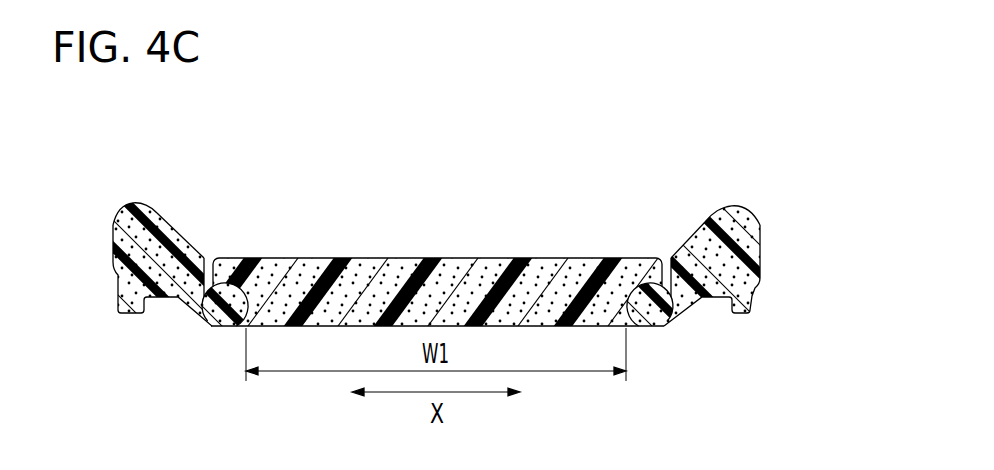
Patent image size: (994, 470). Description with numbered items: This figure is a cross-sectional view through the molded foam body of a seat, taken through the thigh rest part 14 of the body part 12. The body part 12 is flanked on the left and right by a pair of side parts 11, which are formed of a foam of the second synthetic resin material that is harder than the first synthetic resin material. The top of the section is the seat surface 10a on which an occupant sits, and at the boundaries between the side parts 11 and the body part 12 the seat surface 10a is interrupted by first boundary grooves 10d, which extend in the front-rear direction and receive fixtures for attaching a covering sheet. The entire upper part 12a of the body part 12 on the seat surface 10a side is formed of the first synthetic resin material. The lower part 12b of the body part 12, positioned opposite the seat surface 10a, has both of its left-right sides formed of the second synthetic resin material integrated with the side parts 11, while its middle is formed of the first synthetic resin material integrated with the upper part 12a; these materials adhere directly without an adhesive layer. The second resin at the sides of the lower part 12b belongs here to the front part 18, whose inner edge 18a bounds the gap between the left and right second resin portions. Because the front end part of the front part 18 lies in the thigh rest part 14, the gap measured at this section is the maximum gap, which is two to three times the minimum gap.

The seat surface 10a is at (165, 205).
The first boundary grooves 10d is at (205, 280).
The side parts 11 is at (434, 238).
The body part 12 is at (430, 246).
The upper part 12a is at (372, 250).
The lower part 12b is at (678, 330).
The thigh rest part 14 is at (434, 270).
The front part 18 is at (392, 304).
The inner edge 18a is at (250, 307).